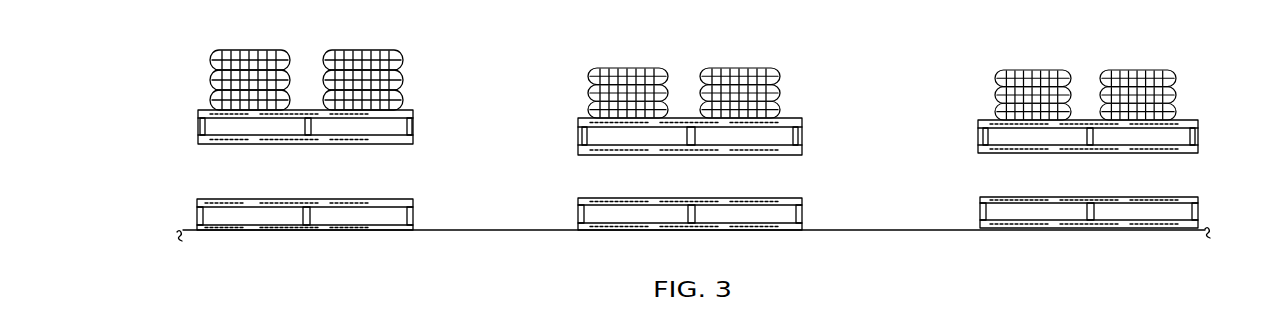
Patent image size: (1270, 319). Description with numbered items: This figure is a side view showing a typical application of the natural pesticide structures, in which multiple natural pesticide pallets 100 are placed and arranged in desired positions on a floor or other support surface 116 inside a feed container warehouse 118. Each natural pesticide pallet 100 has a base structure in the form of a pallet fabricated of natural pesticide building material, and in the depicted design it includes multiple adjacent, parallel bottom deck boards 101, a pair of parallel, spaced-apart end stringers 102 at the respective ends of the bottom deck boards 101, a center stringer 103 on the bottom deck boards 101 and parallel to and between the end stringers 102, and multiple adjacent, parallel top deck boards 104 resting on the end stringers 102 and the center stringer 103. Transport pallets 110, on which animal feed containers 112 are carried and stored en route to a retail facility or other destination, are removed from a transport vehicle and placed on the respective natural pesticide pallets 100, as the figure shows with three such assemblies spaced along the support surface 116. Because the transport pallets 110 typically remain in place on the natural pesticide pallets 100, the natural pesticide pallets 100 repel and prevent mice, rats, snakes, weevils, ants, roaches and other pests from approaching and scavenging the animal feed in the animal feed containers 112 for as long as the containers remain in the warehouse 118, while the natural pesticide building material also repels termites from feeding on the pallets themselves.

The natural pesticide pallet 100 is at (689, 213).
The bottom deck boards 101 is at (282, 230).
The end stringers 102 is at (442, 178).
The center stringer 103 is at (337, 177).
The top deck boards 104 is at (373, 203).
The transport pallet 110 is at (413, 127).
The animal feed containers 112 is at (324, 78).
The support surface 116 is at (480, 230).
The feed container warehouse 118 is at (925, 145).